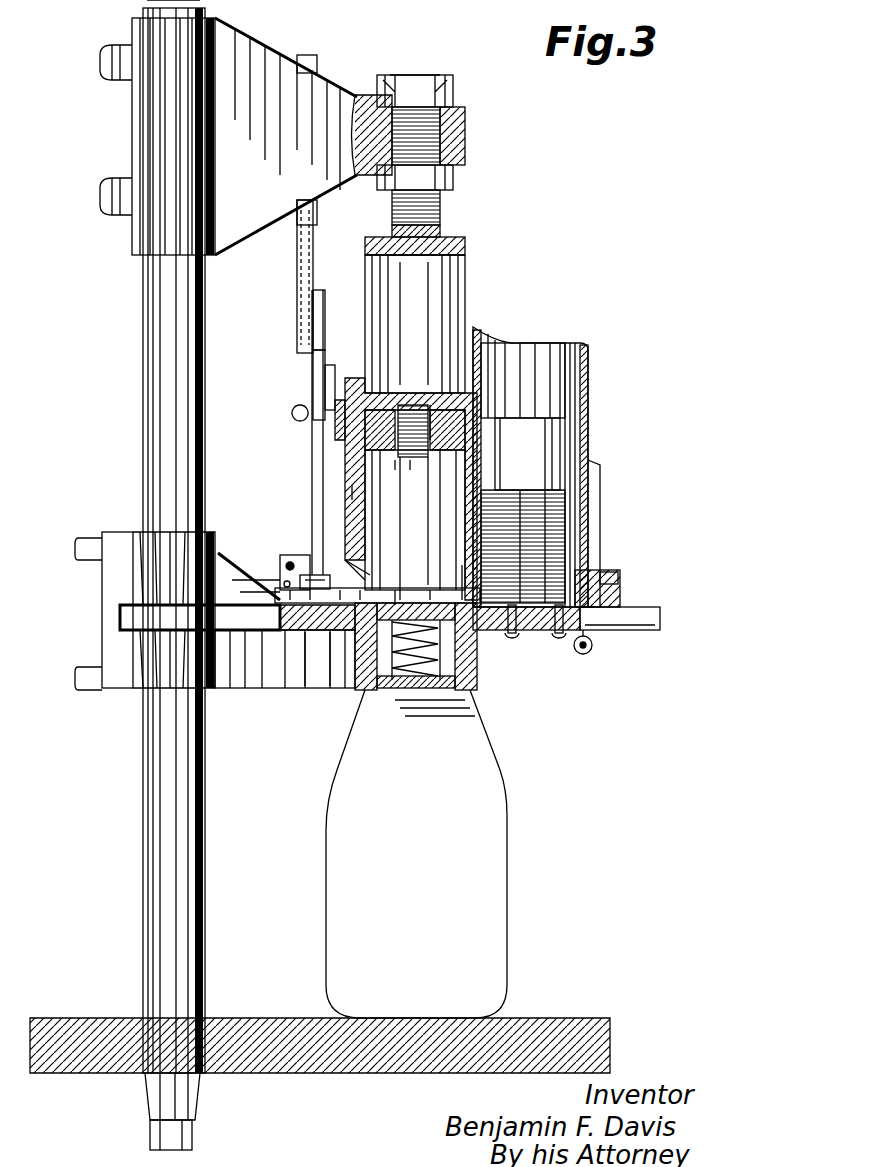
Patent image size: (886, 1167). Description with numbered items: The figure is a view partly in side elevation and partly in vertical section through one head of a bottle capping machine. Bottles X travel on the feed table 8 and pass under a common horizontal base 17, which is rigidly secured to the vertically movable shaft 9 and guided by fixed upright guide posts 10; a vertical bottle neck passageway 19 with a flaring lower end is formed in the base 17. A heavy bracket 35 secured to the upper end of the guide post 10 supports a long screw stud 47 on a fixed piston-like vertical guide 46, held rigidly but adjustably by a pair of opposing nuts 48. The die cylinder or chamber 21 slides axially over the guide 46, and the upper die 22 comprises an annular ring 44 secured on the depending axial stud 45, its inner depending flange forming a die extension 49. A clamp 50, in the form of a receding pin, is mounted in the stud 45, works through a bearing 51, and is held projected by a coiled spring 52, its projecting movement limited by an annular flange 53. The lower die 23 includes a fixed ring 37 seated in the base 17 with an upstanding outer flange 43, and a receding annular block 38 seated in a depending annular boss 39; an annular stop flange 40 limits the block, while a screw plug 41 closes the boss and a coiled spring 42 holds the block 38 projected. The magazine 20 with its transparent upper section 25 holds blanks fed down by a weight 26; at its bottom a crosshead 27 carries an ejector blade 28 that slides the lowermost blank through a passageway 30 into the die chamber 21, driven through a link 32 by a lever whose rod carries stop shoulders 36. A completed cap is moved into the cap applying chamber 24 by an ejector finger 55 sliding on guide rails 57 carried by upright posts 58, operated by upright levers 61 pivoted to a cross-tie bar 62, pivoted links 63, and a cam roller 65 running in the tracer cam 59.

The feed table 8 is at (235, 1030).
The vertically movable shaft 9 is at (195, 1135).
The fixed upright guide posts 10 is at (155, 330).
The common horizontal base 17 is at (270, 684).
The vertical bottle neck passageway 19 is at (311, 659).
The magazine 20 is at (600, 507).
The die cylinder or chamber 21 is at (417, 521).
The upper die 22 is at (480, 412).
The lower die 23 is at (400, 603).
The cap applying chamber 24 is at (527, 454).
The transparent upper section 25 is at (590, 395).
The weight 26 is at (578, 560).
The crosshead 27 is at (532, 636).
The ejector blade 28 is at (590, 575).
The passageway 30 is at (462, 575).
The link 32 is at (580, 655).
The heavy bracket 35 is at (320, 100).
The stop shoulders 36 is at (362, 578).
The fixed ring 37 is at (311, 634).
The receding annular block 38 is at (345, 660).
The depending annular boss 39 is at (357, 688).
The annular stop flange 40 is at (345, 682).
The screw plug 41 is at (392, 688).
The coiled spring 42 is at (425, 690).
The annular upstanding outer flange 43 is at (200, 632).
The annular ring 44 is at (345, 480).
The depending axial stud 45 is at (415, 520).
The piston-like vertical guide 46 is at (465, 248).
The screw stud 47 is at (440, 214).
The opposing nuts 48 is at (453, 100).
The die extension 49 is at (360, 485).
The clamp 50 is at (419, 479).
The bearing 51 is at (394, 479).
The coiled spring 52 is at (413, 404).
The annular flange 53 is at (450, 395).
The ejector finger 55 is at (385, 588).
The guide rails 57 is at (283, 560).
The upright posts 58 is at (275, 585).
The tracer cam 59 is at (313, 258).
The upright levers 61 is at (318, 478).
The cross-tie bar 62 is at (322, 383).
The pivoted links 63 is at (312, 575).
The cam roller 65 is at (300, 305).
The bottle x is at (416, 854).